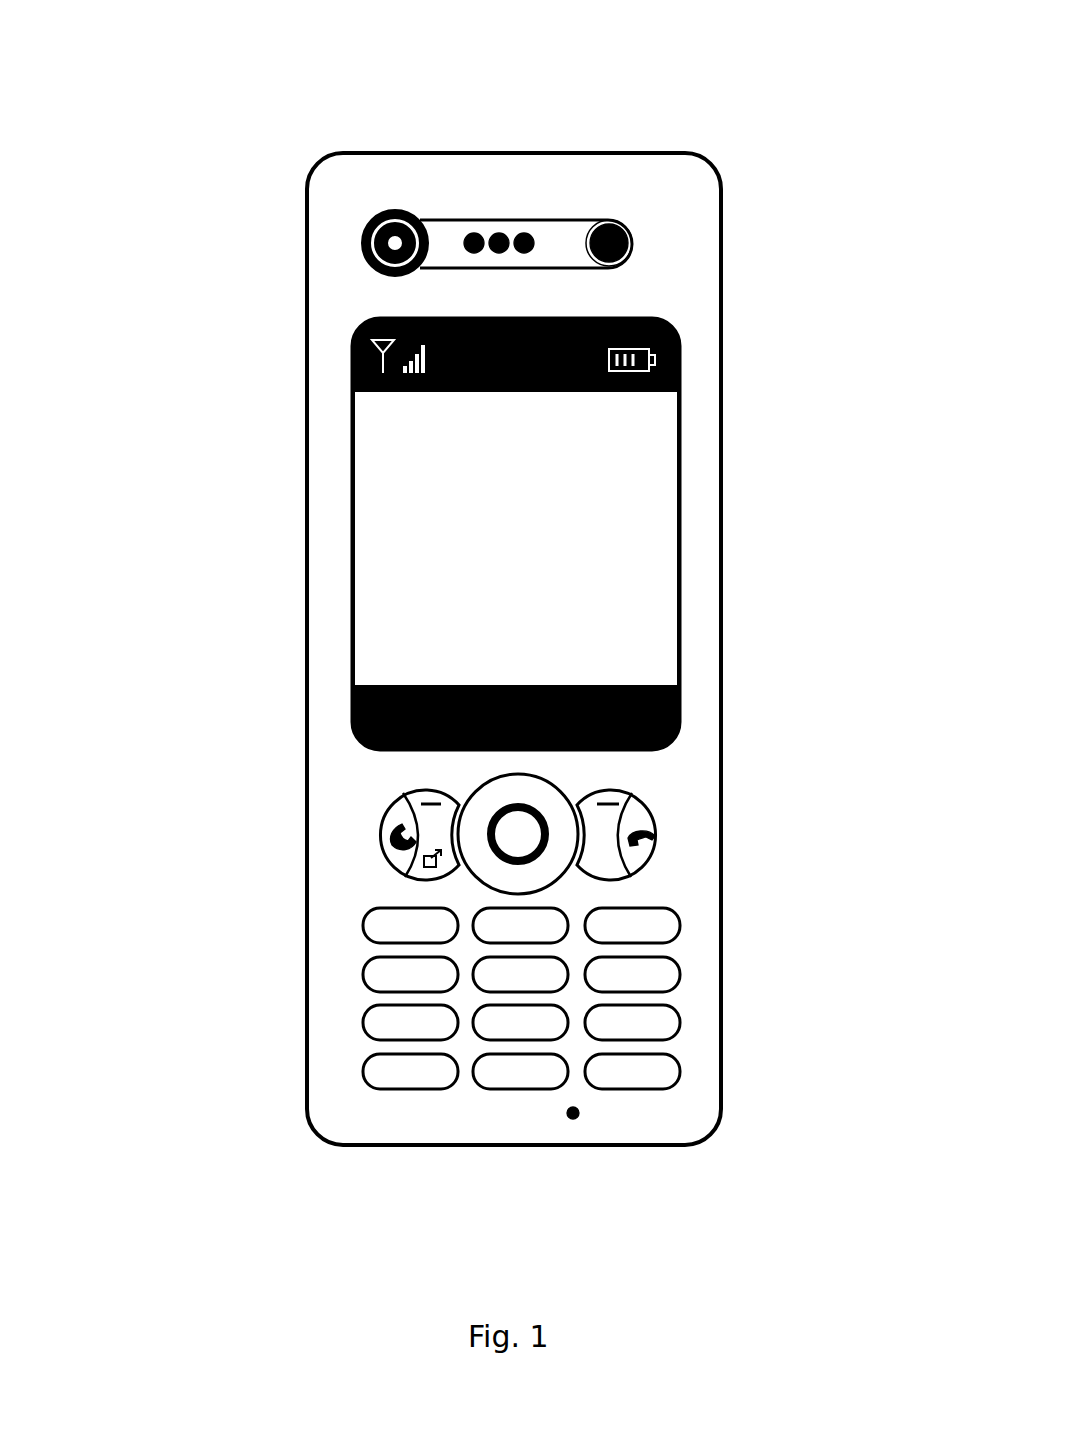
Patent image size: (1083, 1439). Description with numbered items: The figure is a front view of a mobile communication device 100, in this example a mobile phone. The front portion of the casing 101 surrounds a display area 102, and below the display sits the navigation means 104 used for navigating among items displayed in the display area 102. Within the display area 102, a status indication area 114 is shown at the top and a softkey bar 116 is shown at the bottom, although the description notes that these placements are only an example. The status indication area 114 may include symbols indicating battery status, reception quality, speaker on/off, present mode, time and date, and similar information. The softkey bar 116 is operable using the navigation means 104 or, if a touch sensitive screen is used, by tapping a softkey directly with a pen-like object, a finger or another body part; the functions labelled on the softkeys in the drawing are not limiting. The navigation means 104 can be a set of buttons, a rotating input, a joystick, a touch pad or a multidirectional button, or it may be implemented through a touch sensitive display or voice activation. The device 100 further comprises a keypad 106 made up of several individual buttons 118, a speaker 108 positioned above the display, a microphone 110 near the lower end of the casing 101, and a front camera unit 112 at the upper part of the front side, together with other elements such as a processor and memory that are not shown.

The mobile communication device 100 is at (636, 128).
The casing 101 is at (308, 490).
The display area 102 is at (618, 563).
The navigation means 104 is at (567, 780).
The keypad 106 is at (482, 1007).
The speaker 108 is at (494, 232).
The microphone 110 is at (569, 1114).
The front camera unit 112 is at (364, 222).
The status indication area 114 is at (352, 328).
The softkey bar 116 is at (352, 690).
The individual buttons 118 is at (363, 975).